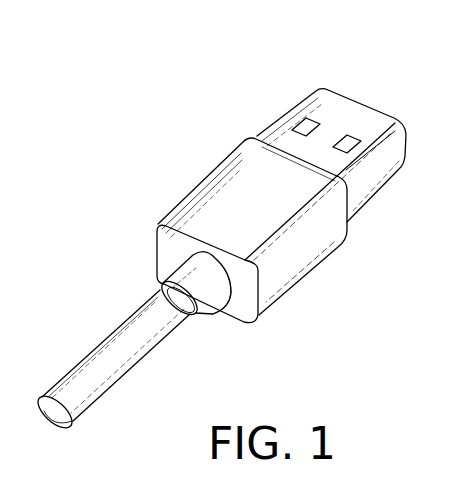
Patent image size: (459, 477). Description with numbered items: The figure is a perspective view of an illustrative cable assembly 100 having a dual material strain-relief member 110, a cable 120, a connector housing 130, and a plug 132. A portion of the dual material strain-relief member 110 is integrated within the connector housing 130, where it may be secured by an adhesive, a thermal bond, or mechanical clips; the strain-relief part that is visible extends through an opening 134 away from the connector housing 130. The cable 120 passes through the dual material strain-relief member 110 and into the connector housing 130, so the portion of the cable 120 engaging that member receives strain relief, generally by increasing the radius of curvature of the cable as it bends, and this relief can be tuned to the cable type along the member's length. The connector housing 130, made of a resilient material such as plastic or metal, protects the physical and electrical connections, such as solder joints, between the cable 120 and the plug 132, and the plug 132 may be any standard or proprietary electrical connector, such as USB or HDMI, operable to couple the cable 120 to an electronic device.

The cable assembly 100 is at (216, 36).
The dual material strain-relief member 110 is at (168, 265).
The cable 120 is at (84, 362).
The connector housing 130 is at (208, 172).
The plug 132 is at (304, 99).
The opening 134 is at (228, 306).